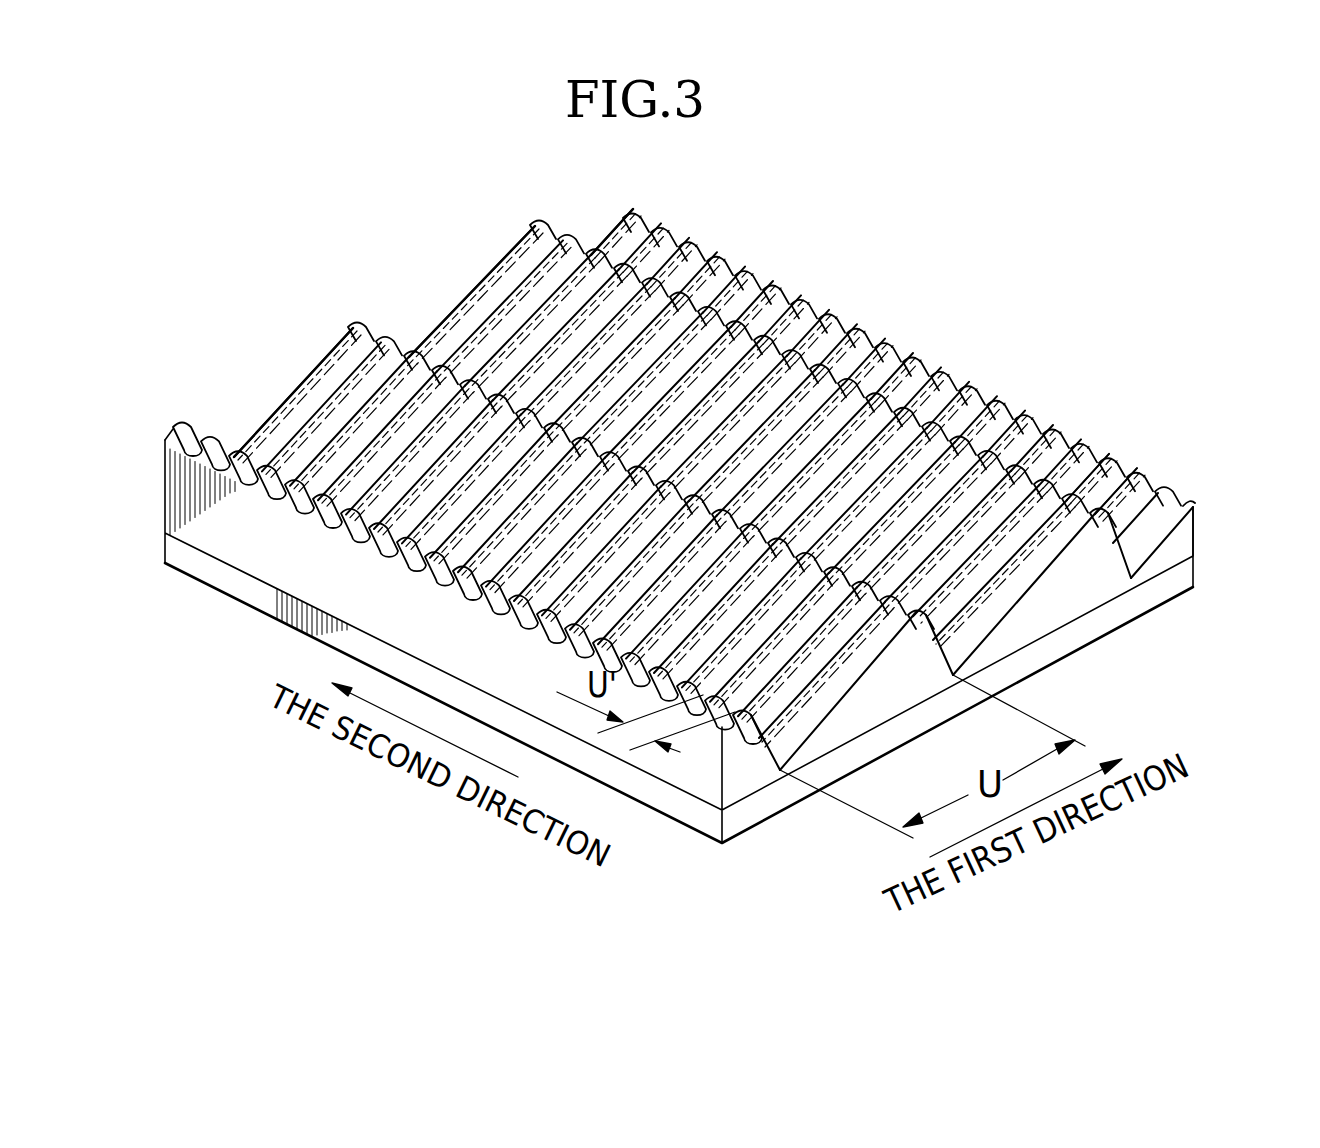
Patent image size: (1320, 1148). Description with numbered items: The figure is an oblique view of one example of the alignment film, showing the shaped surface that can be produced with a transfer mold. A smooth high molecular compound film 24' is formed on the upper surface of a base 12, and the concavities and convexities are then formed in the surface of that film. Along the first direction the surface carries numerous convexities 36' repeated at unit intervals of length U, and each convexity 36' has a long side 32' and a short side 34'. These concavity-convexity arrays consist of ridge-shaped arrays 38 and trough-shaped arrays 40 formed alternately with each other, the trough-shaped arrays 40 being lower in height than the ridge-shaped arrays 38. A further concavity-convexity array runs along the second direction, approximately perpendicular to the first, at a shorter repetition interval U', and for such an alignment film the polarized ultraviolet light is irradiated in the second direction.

The base 12 is at (1197, 571).
The high molecular compound film 24' is at (730, 509).
The long side 32' is at (703, 509).
The short side 34' is at (817, 519).
The convexity 36' is at (745, 487).
The ridge-shaped arrays 38 is at (1195, 491).
The trough-shaped arrays 40 is at (1133, 455).